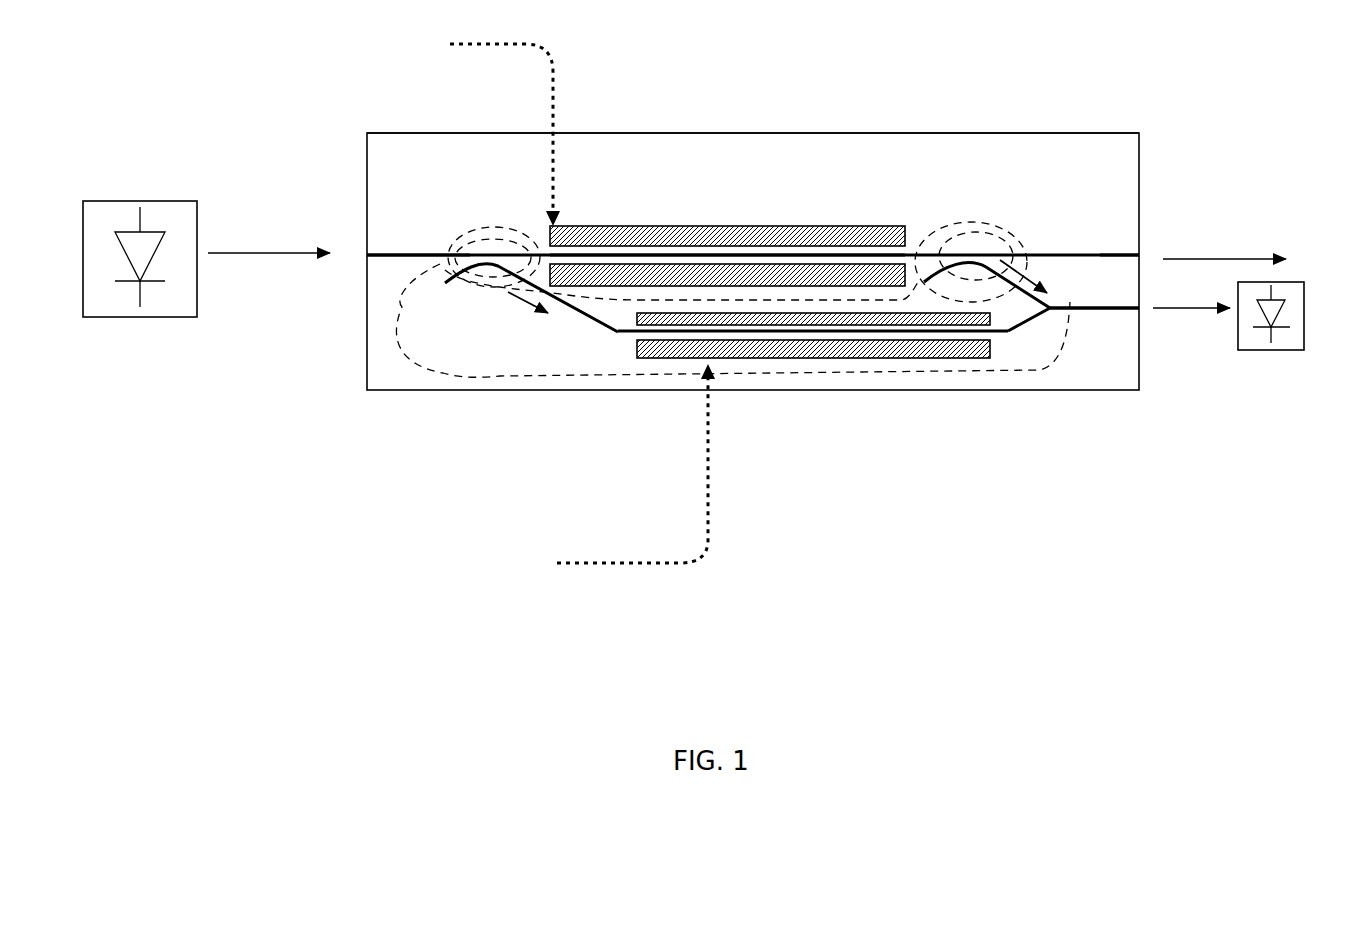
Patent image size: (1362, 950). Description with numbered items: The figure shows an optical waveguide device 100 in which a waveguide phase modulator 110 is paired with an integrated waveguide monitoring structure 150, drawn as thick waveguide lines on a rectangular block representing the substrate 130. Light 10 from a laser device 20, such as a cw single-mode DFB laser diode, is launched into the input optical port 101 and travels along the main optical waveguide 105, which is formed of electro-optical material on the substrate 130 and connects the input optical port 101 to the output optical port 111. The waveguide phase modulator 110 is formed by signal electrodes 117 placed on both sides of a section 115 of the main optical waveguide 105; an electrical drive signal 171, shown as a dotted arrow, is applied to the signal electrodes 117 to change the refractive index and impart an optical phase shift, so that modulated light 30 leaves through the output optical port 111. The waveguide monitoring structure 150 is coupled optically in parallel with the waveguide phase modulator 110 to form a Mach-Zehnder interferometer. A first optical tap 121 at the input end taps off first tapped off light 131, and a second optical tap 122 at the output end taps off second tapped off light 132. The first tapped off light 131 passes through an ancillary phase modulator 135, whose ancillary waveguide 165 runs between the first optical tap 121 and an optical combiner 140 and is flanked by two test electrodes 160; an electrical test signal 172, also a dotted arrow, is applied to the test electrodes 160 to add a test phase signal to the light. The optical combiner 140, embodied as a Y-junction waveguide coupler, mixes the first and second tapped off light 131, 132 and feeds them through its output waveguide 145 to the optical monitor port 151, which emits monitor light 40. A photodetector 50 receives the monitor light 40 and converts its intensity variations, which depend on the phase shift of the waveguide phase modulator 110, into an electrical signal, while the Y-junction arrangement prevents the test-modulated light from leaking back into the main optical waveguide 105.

The light 10 is at (282, 258).
The laser device 20 is at (113, 317).
The modulated light 30 is at (1248, 257).
The monitor light 40 is at (1183, 313).
The photodetector 50 is at (1293, 350).
The optical waveguide device 100 is at (672, 133).
The input optical port 101 is at (364, 253).
The main optical waveguide 105 is at (419, 253).
The waveguide phase modulator 110 is at (740, 205).
The output optical port 111 is at (1141, 250).
The section of main optical waveguide 115 is at (683, 258).
The signal electrodes 117 is at (581, 222).
The first optical tap 121 is at (481, 283).
The second optical tap 122 is at (981, 237).
The substrate 130 is at (423, 165).
The first tapped off light 131 is at (541, 310).
The second tapped off light 132 is at (1027, 257).
The ancillary phase modulator 135 is at (880, 374).
The optical combiner 140 is at (1055, 313).
The output waveguide 145 is at (1102, 310).
The waveguide monitoring structure 150 is at (642, 370).
The optical monitor port 151 is at (1140, 318).
The test electrodes 160 is at (822, 358).
The ancillary waveguide 165 is at (852, 358).
The electrical drive signal 171 is at (563, 73).
The electrical test signal 172 is at (700, 553).